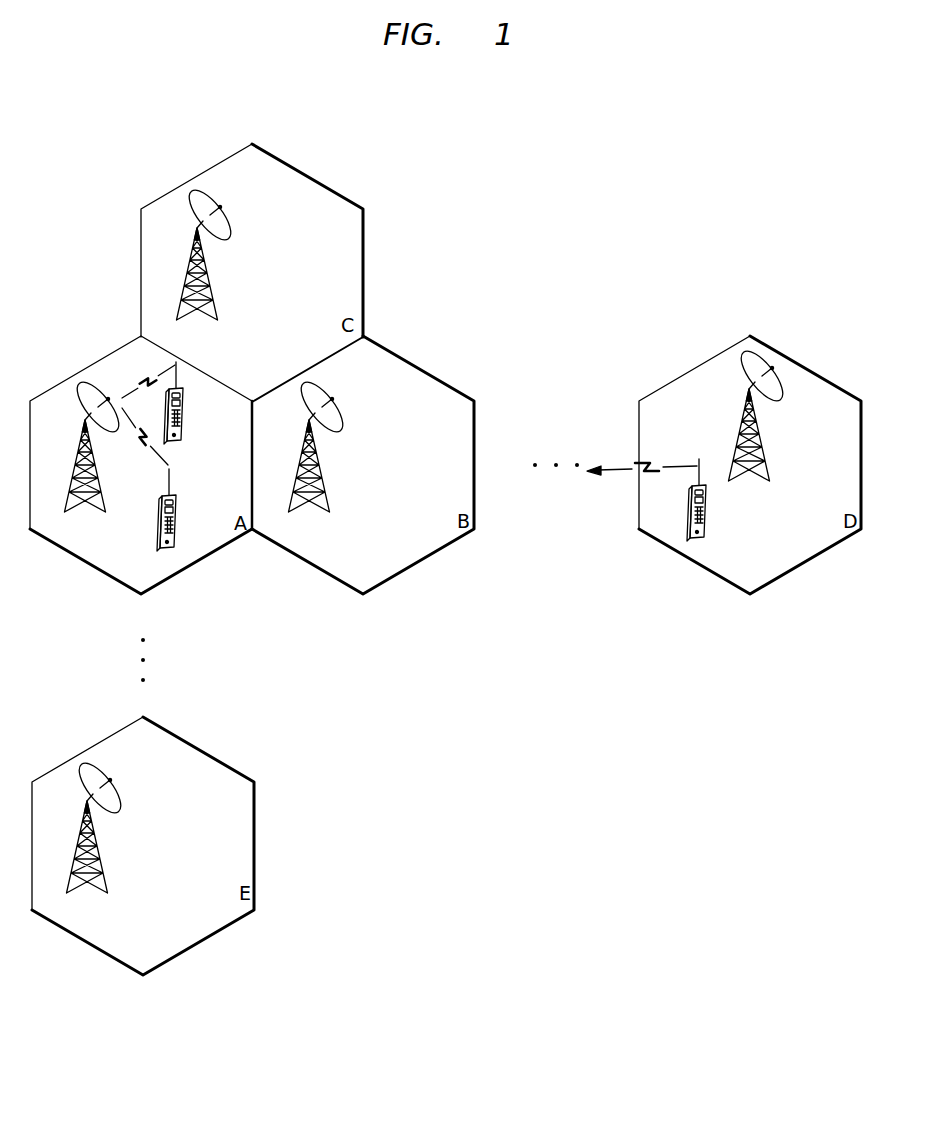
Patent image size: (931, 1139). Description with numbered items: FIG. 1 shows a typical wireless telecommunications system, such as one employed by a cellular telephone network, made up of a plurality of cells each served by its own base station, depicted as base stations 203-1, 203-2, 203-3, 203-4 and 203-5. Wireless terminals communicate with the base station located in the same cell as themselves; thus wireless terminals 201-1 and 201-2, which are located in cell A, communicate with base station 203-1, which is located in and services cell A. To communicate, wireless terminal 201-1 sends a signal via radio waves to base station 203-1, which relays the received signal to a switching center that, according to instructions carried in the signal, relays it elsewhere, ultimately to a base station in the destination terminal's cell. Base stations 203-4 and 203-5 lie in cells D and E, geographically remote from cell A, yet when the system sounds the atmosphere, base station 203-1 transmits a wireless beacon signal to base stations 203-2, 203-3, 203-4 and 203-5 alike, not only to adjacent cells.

The wireless terminal 201-1 is at (184, 432).
The wireless terminal 201-2 is at (176, 495).
The base station 203-1 is at (93, 459).
The base station 203-2 is at (326, 483).
The base station 203-3 is at (213, 298).
The base station 203-4 is at (765, 452).
The base station 203-5 is at (104, 875).